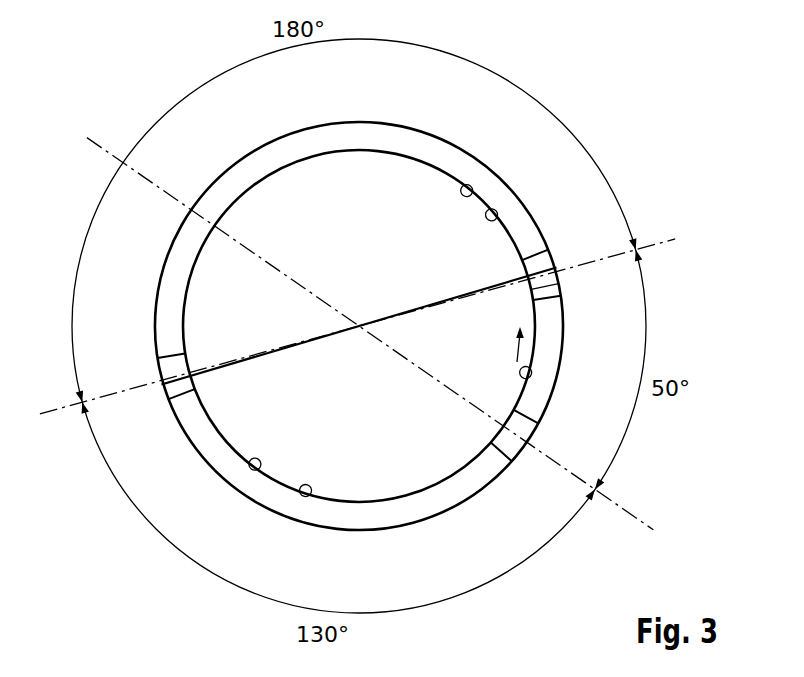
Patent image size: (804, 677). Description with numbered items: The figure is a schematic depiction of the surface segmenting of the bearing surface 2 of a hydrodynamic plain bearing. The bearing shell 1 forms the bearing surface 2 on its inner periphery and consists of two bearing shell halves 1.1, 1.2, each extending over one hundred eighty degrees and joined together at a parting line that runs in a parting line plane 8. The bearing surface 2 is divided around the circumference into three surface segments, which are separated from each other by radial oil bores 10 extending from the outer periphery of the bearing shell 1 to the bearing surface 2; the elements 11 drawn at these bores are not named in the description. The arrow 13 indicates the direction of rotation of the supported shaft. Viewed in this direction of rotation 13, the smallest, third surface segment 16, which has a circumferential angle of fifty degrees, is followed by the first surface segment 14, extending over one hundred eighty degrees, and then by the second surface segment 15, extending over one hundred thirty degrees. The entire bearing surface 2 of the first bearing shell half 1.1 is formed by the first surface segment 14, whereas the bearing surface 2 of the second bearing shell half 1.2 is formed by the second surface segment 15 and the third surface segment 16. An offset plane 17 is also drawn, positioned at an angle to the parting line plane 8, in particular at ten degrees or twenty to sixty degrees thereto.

The bearing shell 1 is at (529, 79).
The first bearing shell half 1.1 is at (386, 124).
The second bearing shell half 1.2 is at (404, 527).
The bearing surface 2 is at (497, 209).
The parting line plane 8 is at (676, 239).
The radial oil bores 10 is at (542, 265).
The clamp 11 is at (540, 300).
The arrow indicating direction of rotation 13 is at (525, 347).
The first surface segment 14 is at (474, 187).
The second surface segment 15 is at (306, 497).
The third surface segment 16 is at (530, 374).
The offset plane 17 is at (90, 135).